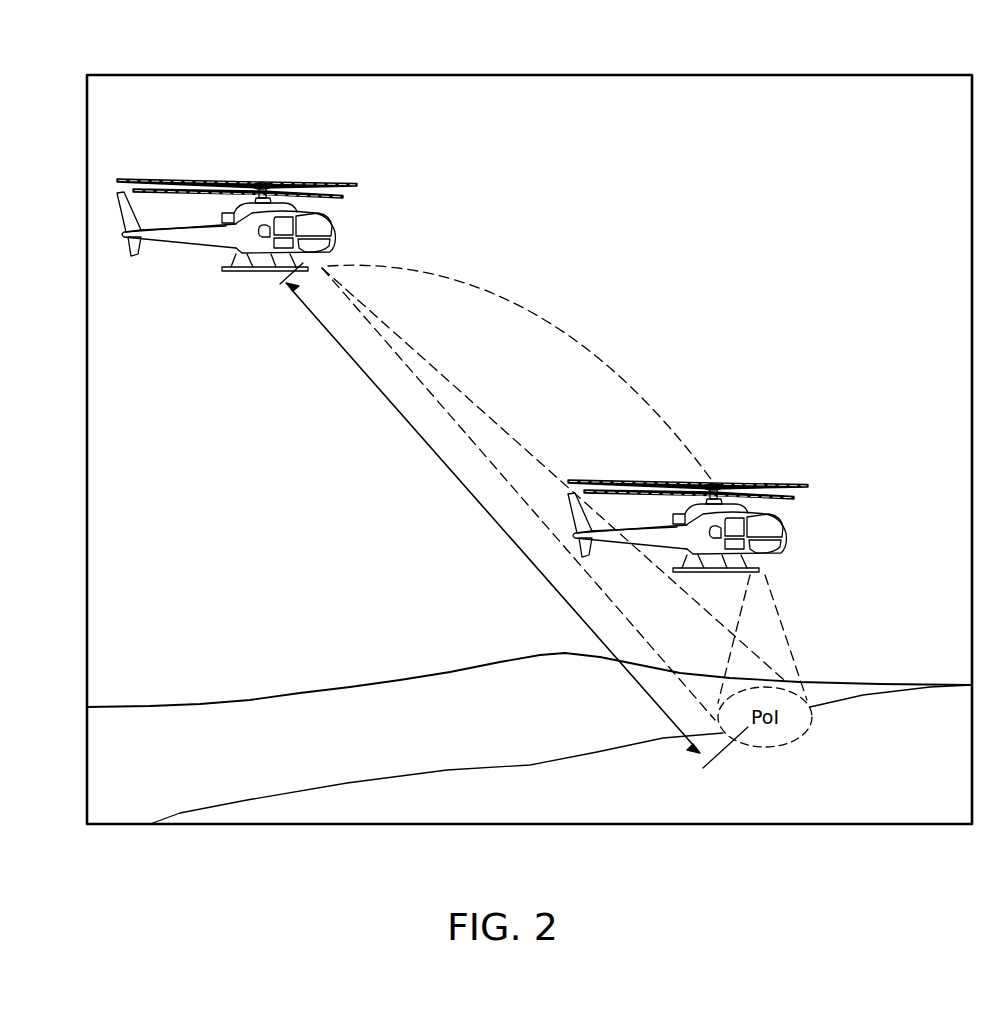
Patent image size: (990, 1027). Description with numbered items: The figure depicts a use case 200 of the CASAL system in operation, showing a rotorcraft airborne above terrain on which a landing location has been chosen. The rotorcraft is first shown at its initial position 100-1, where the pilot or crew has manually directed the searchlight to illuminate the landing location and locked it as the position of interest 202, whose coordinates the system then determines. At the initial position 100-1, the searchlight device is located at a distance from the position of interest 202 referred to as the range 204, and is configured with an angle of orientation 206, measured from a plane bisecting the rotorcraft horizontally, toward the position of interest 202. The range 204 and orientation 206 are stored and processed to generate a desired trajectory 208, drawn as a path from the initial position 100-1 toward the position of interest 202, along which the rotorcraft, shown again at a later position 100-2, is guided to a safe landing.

The operating environment 200 is at (120, 75).
The initial position 100-1 is at (262, 183).
The second aircraft (helicopter) 100-2 is at (713, 484).
The position of interest 202 is at (777, 824).
The range 204 is at (427, 445).
The angle of orientation 206 is at (316, 264).
The desired trajectory 208 is at (587, 347).